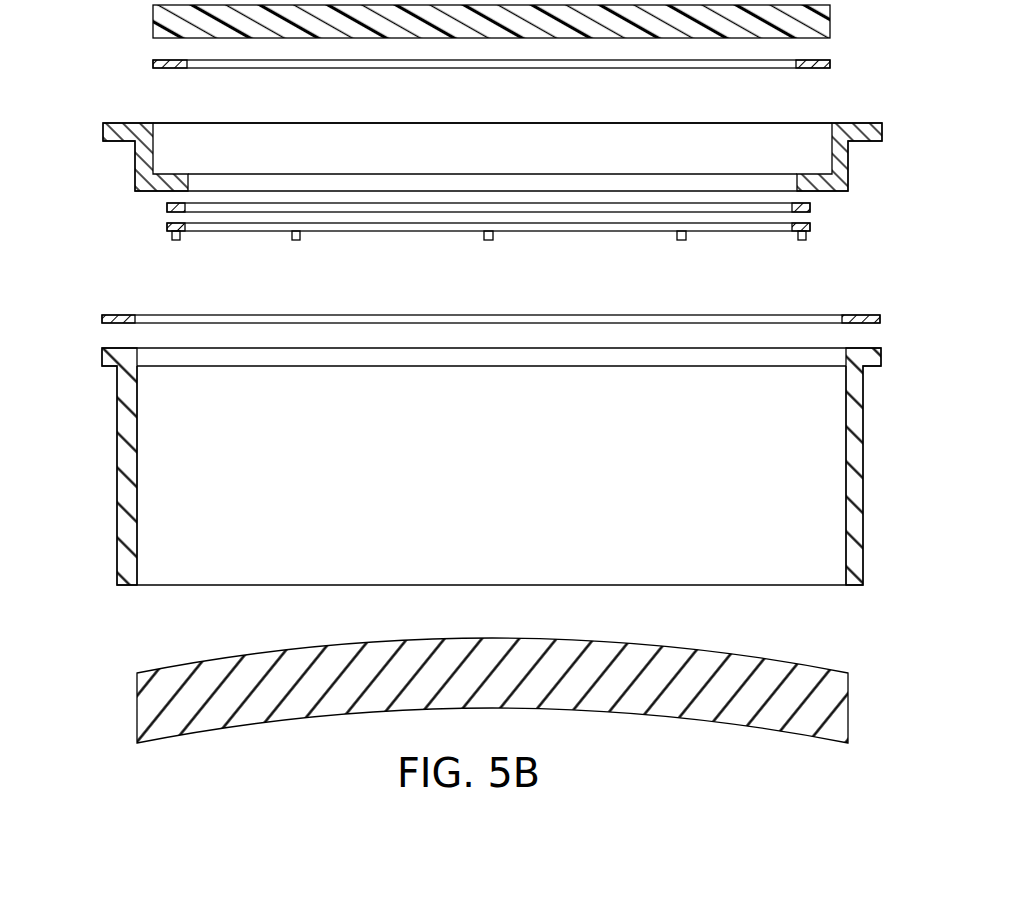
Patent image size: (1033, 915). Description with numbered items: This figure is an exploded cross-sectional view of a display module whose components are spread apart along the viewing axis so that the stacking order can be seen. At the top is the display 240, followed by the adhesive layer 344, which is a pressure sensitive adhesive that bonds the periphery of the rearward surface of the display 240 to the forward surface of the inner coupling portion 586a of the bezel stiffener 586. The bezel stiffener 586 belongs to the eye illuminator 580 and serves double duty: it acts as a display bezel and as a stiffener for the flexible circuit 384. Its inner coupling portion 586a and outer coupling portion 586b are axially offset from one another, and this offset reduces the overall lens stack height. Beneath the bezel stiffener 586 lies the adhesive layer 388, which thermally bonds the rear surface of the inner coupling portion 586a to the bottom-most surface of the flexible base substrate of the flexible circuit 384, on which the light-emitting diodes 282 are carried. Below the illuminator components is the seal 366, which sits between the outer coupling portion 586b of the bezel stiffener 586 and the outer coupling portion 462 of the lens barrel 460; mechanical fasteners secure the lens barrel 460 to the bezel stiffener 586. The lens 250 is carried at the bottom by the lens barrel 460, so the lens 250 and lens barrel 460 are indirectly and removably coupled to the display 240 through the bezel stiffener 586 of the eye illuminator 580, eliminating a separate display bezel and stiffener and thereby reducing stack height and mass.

The eye illuminator 580 is at (114, 74).
The display 240 is at (830, 14).
The adhesive layer 344 is at (830, 63).
The bezel stiffener 586 is at (487, 154).
The inner coupling portion 586a is at (156, 173).
The outer coupling portion 586b is at (103, 126).
The adhesive layer 388 is at (810, 207).
The flexible circuit 384 is at (810, 228).
The light-emitting diodes 282 is at (808, 238).
The seal 366 is at (880, 318).
The outer coupling portion 462 is at (102, 353).
The lens barrel 460 is at (488, 466).
The lens 250 is at (838, 707).